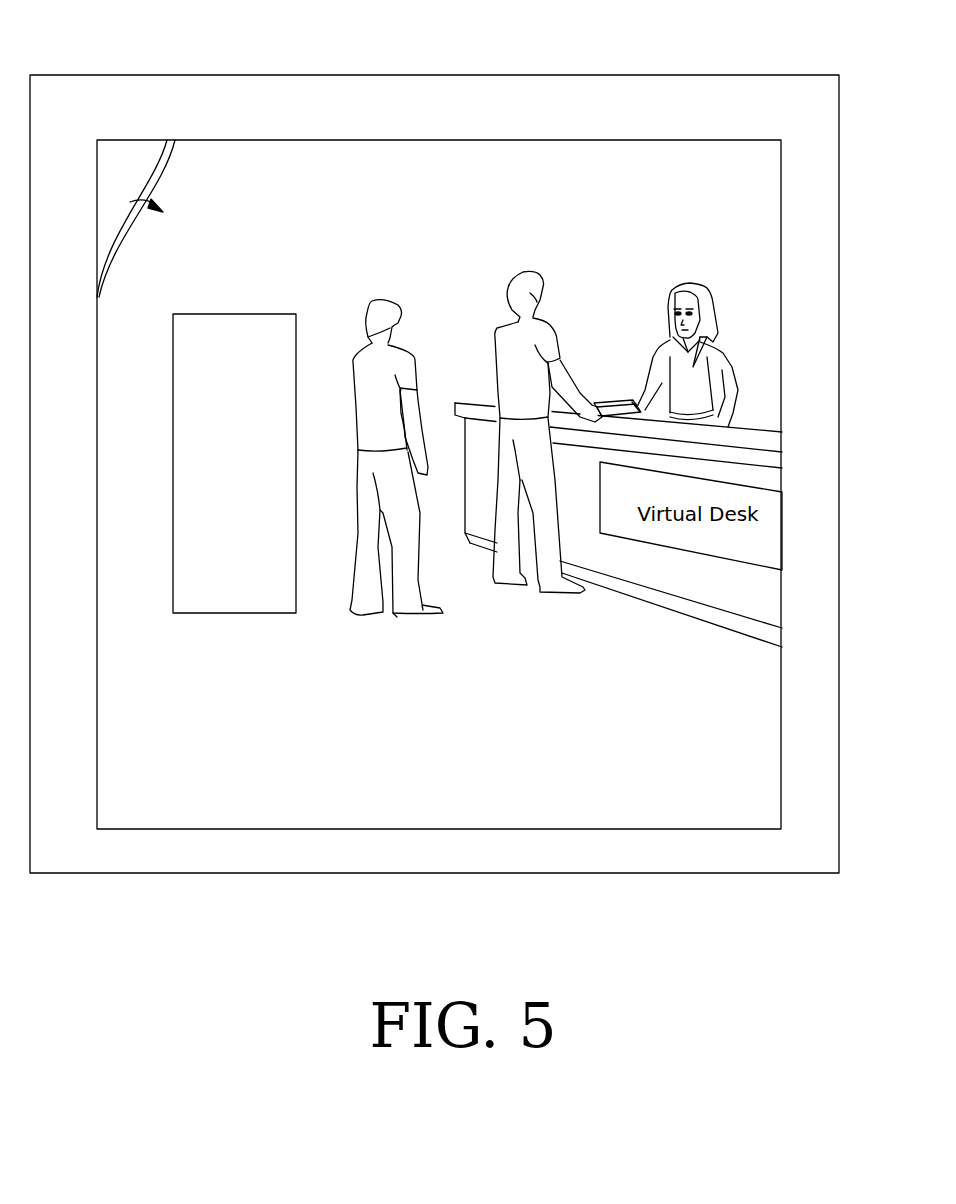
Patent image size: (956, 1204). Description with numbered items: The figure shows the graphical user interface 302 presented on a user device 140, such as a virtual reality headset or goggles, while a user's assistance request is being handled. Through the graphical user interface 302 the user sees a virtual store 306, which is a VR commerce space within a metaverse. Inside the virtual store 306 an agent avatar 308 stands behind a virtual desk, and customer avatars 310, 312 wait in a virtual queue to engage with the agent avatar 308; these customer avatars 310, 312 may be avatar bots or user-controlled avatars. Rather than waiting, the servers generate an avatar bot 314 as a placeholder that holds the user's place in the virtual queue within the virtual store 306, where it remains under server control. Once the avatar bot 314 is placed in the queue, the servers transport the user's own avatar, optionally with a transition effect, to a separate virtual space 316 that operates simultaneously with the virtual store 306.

The user device 140 is at (416, 128).
The graphical user interface 302 is at (421, 192).
The virtual store 306 is at (434, 816).
The agent avatar 308 is at (670, 360).
The customer avatar 310 is at (521, 361).
The customer avatar 312 is at (373, 380).
The avatar bot 314 is at (216, 490).
The separate virtual space 316 is at (112, 162).